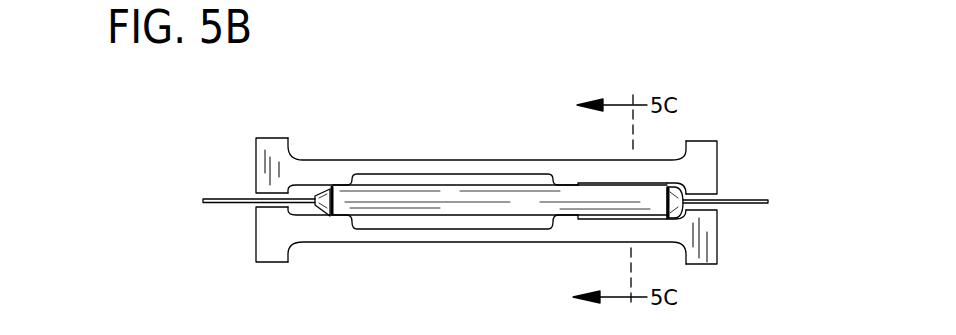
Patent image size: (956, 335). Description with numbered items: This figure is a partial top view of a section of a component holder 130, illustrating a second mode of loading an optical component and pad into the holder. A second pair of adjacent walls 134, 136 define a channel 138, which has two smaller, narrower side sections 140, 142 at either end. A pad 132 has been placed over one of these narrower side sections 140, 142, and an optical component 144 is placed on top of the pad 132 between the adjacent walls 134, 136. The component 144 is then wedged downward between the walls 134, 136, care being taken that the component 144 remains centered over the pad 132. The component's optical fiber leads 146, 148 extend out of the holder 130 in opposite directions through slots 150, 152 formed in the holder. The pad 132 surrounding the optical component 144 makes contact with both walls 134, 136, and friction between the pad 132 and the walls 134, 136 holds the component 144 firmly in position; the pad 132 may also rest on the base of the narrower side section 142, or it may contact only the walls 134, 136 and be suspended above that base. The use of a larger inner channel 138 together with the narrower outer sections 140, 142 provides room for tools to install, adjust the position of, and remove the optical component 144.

The component holder 130 is at (726, 66).
The pad 132 is at (655, 215).
The adjacent wall 134 is at (397, 160).
The adjacent wall 136 is at (437, 243).
The channel 138 is at (522, 180).
The side section 140 is at (305, 189).
The side section 142 is at (678, 186).
The optical component 144 is at (512, 203).
The optical fiber lead 146 is at (213, 205).
The optical fiber lead 148 is at (753, 204).
The slot 150 is at (255, 195).
The slot 152 is at (705, 193).